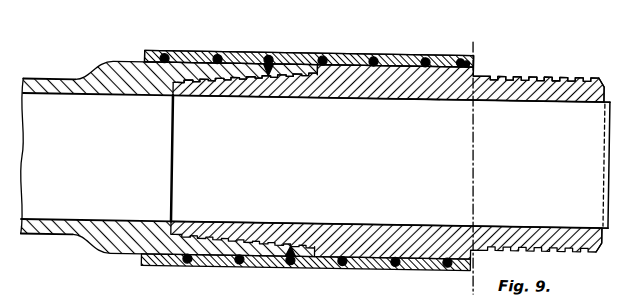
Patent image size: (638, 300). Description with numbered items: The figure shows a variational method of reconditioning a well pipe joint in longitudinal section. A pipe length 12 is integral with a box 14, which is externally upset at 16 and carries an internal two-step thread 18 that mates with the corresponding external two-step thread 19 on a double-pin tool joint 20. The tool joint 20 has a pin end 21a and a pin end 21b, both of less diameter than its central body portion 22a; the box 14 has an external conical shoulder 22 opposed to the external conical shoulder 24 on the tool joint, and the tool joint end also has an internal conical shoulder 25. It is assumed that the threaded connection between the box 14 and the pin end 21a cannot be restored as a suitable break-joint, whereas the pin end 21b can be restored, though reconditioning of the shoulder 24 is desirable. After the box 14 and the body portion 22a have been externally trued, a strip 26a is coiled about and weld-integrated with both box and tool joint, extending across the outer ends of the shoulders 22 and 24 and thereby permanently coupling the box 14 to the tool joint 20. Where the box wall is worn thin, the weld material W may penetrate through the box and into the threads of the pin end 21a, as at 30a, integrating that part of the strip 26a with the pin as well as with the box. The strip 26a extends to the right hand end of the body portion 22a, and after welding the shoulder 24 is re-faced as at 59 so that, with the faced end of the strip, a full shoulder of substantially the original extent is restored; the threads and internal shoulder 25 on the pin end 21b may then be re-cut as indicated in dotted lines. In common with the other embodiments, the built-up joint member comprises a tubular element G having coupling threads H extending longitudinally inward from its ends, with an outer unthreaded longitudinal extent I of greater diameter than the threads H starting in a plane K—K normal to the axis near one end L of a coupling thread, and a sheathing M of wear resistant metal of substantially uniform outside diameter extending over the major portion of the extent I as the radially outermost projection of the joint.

The pipe length 12 is at (55, 58).
The box 14 is at (119, 264).
The external upset 16 is at (115, 61).
The internal two-step thread 18 is at (218, 83).
The external two-step thread 19 is at (246, 53).
The double-pin tool joint 20 is at (378, 85).
The pin end 21a is at (192, 76).
The pin end 21b is at (536, 74).
The external conical shoulder 22 is at (314, 69).
The body portion 22a is at (382, 244).
The external conical shoulder 24 is at (483, 69).
The internal conical shoulder 25 is at (621, 61).
The strip 26a is at (371, 20).
The weld penetration 30a is at (269, 70).
The re-facing 59 is at (465, 51).
The weld material W is at (423, 51).
The outer unthreaded longitudinal extent I is at (459, 52).
The plane K— K is at (459, 278).
The end of coupling thread L is at (489, 70).
The coupling thread H is at (547, 76).
The tubular element G is at (424, 86).
The sheathing M is at (375, 263).